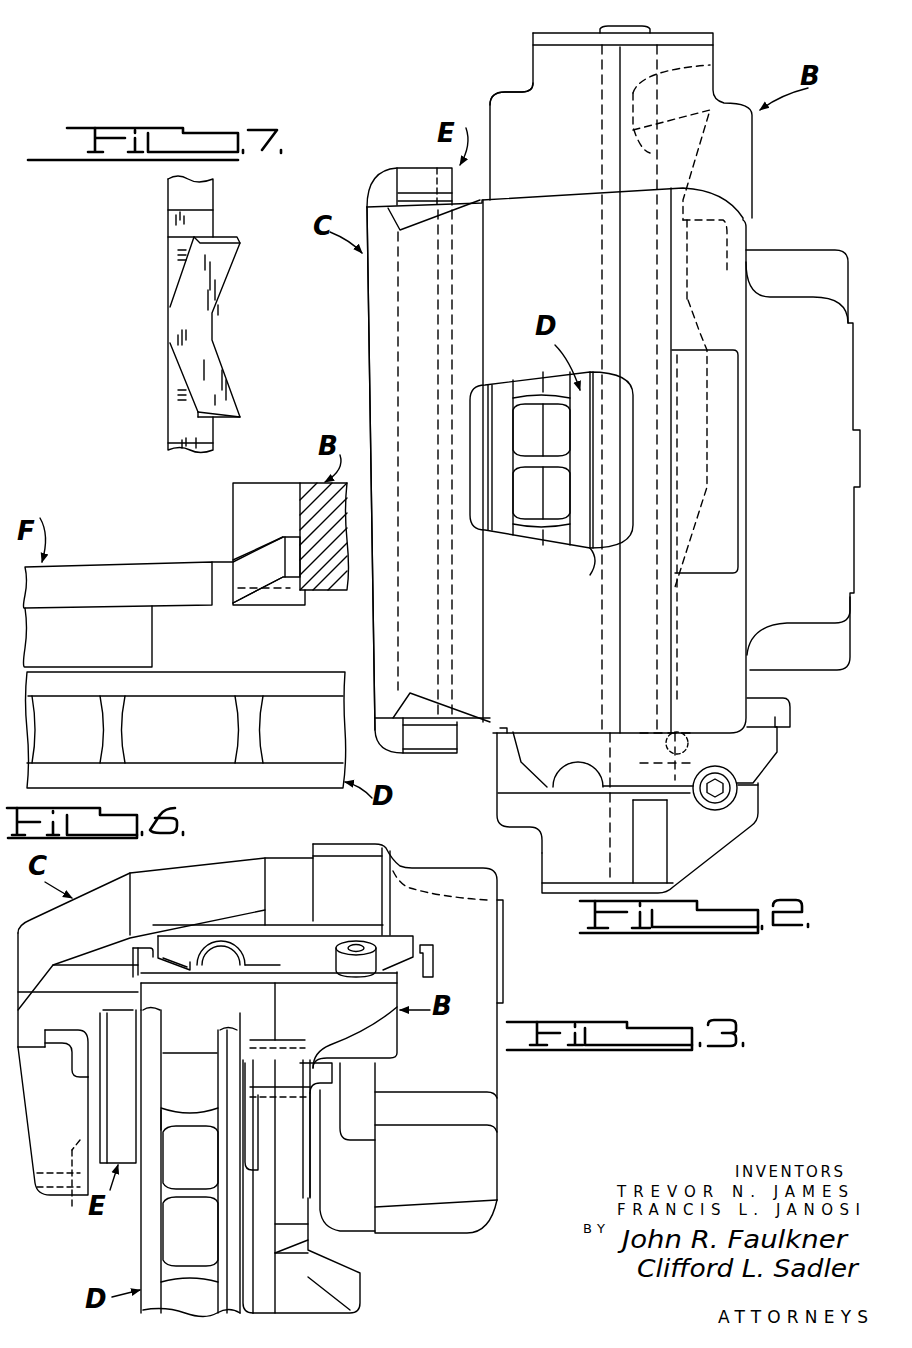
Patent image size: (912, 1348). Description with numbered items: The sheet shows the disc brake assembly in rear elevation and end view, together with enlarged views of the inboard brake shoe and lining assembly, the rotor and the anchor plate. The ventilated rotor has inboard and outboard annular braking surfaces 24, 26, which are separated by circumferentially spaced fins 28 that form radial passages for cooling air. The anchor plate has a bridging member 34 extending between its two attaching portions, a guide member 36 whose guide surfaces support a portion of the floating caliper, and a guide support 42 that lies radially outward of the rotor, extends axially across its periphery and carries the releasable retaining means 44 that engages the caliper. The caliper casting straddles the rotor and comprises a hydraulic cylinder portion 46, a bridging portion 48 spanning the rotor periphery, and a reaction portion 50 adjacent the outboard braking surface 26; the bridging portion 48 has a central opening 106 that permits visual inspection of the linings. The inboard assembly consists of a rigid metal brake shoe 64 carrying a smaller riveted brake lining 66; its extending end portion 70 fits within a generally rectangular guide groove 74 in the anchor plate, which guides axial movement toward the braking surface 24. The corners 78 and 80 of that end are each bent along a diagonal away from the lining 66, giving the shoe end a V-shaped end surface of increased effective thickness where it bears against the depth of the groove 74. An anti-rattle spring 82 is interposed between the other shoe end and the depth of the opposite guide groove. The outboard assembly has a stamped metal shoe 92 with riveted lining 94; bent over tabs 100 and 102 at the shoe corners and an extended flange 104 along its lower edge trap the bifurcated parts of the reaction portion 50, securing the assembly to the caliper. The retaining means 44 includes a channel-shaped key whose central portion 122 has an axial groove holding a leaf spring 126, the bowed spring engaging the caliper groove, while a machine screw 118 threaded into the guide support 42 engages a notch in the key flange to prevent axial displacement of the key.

In FIG. 2, the inboard annular braking surface 24 is at (580, 520).
In FIG. 6, the inboard annular braking surface 24 is at (278, 672).
In FIG. 3, the inboard annular braking surface 24 is at (222, 1148).
In FIG. 2, the outboard annular braking surface 26 is at (500, 400).
In FIG. 6, the outboard annular braking surface 26 is at (292, 768).
In FIG. 3, the outboard annular braking surface 26 is at (140, 1245).
In FIG. 2, the fins 28 is at (533, 460).
In FIG. 6, the fins 28 is at (118, 733).
In FIG. 3, the fins 28 is at (190, 1262).
In FIG. 2, the bridging member 34 is at (607, 252).
In FIG. 3, the bridging member 34 is at (347, 1283).
In FIG. 2, the guide member 36 is at (530, 88).
In FIG. 2, the guide support 42 is at (725, 822).
In FIG. 2, the releasable retaining means 44 is at (778, 775).
In FIG. 3, the releasable retaining means 44 is at (478, 937).
In FIG. 2, the hydraulic cylinder portion 46 is at (795, 300).
In FIG. 2, the bridging portion 48 is at (553, 205).
In FIG. 2, the reaction portion 50 is at (375, 362).
In FIG. 3, the reaction portion 50 is at (45, 1145).
In FIG. 7, the inboard brake shoe 64 is at (168, 245).
In FIG. 6, the inboard brake shoe 64 is at (143, 575).
In FIG. 2, the brake lining 66 is at (620, 392).
In FIG. 6, the brake lining 66 is at (140, 633).
In FIG. 7, the end portion 70 is at (178, 315).
In FIG. 6, the end portion 70 is at (298, 605).
In FIG. 6, the guide groove 74 is at (298, 507).
In FIG. 7, the corner 78 is at (228, 405).
In FIG. 6, the corner 78 is at (280, 538).
In FIG. 7, the corner 80 is at (228, 250).
In FIG. 2, the anti-rattle spring 82 is at (700, 745).
In FIG. 3, the anti-rattle spring 82 is at (345, 1077).
In FIG. 3, the outboard brake shoe 92 is at (93, 1074).
In FIG. 2, the brake lining 94 is at (478, 455).
In FIG. 3, the brake lining 94 is at (117, 1028).
In FIG. 2, the bent over tab 100 is at (413, 170).
In FIG. 2, the bent over tab 102 is at (425, 740).
In FIG. 3, the bent over tab 102 is at (57, 1030).
In FIG. 3, the extended flange 104 is at (51, 1201).
In FIG. 2, the central opening 106 is at (560, 590).
In FIG. 2, the machine screw 118 is at (733, 800).
In FIG. 3, the machine screw 118 is at (350, 945).
In FIG. 2, the central portion 122 is at (530, 765).
In FIG. 3, the central portion 122 is at (222, 938).
In FIG. 2, the leaf spring 126 is at (790, 730).
In FIG. 3, the leaf spring 126 is at (138, 948).